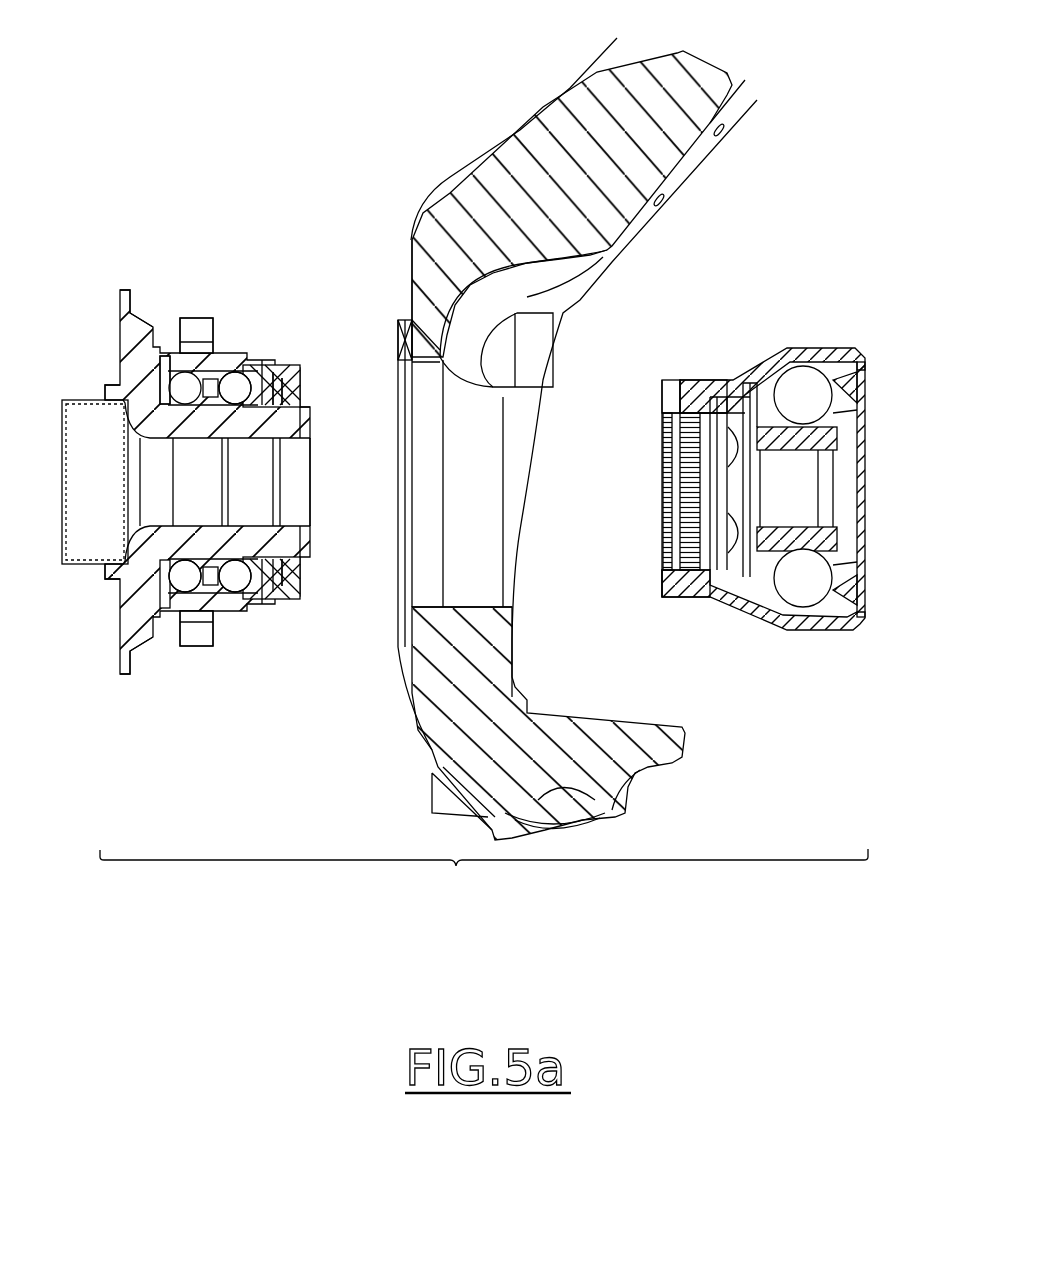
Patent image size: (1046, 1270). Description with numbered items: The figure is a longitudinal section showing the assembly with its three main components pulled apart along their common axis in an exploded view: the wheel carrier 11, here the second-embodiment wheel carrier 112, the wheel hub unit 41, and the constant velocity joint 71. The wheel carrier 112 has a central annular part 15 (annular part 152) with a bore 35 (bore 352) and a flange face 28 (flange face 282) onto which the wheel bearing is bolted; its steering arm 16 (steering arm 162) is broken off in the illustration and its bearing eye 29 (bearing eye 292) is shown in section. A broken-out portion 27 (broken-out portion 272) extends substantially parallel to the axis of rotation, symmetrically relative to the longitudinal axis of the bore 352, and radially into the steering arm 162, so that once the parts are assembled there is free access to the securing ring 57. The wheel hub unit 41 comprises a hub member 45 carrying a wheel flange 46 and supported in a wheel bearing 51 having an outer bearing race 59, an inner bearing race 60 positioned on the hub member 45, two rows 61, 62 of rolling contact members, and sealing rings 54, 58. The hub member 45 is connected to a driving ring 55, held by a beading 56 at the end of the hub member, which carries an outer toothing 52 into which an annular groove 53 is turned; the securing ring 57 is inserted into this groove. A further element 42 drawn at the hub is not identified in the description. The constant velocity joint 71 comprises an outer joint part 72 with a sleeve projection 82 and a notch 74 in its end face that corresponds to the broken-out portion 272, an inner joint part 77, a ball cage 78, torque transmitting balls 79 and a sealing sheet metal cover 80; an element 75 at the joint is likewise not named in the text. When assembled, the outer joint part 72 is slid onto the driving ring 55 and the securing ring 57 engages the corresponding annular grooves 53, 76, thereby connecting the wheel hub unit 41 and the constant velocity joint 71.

The wheel hub unit 41 is at (200, 457).
The spindle shaft 42 is at (63, 400).
The hub member 45 is at (112, 390).
The wheel flange 46 is at (120, 322).
The wheel bearing 51 is at (197, 290).
The outer toothing 52 is at (288, 390).
The annular groove 53 is at (301, 404).
The sealing ring 54 is at (261, 360).
The driving ring 55 is at (297, 432).
The beading 56 is at (300, 448).
The securing ring 57 is at (288, 373).
The sealing ring 58 is at (160, 348).
The outer bearing race 59 is at (218, 615).
The inner bearing race 60 is at (279, 585).
The row of rolling contact members 61 is at (244, 585).
The row of rolling contact members 62 is at (198, 587).
The wheel carrier 11 is at (550, 439).
The wheel carrier 112 is at (550, 439).
The steering arm 16 is at (545, 127).
The steering arm 162 is at (584, 367).
The central annular part 15 is at (418, 343).
The central annular part 152 is at (401, 324).
The broken-out portion 27 is at (527, 297).
The broken-out portion 272 is at (556, 318).
The flange face 28 is at (396, 396).
The flange face 282 is at (454, 354).
The bore 35 is at (457, 477).
The bore 352 is at (435, 530).
The bearing eye 29 is at (600, 815).
The bearing eye 292 is at (547, 724).
The constant velocity joint 71 is at (763, 482).
The outer joint part 72 is at (857, 627).
The notch 74 is at (662, 384).
The splined shaft 75 is at (663, 420).
The annular groove 76 is at (672, 381).
The inner joint part 77 is at (830, 535).
The ball cage 78 is at (836, 578).
The torque transmitting balls 79 is at (817, 597).
The sealing sheet metal cover 80 is at (700, 508).
The sleeve projection 82 is at (690, 592).